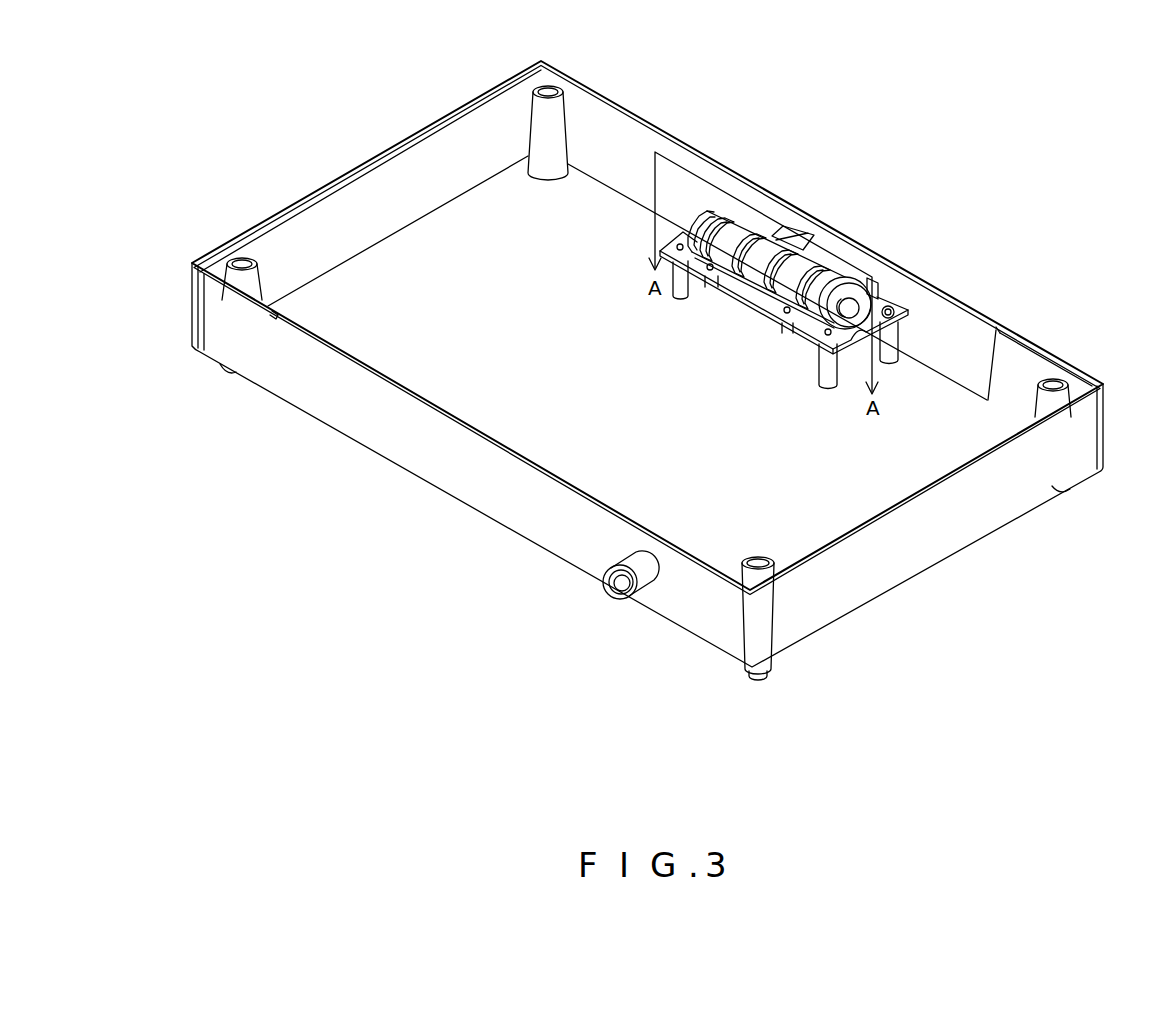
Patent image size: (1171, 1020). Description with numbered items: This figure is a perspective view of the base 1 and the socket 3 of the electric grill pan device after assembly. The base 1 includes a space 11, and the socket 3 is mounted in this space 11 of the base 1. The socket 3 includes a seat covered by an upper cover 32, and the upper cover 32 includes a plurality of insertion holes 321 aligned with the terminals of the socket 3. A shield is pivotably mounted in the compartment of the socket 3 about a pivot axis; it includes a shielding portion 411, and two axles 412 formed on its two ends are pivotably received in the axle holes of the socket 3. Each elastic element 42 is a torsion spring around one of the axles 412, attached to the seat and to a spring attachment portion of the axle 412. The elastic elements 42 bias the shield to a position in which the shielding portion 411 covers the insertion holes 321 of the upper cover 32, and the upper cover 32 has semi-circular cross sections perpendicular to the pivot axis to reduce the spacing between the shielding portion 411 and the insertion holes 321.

The base 1 is at (678, 370).
The space 11 is at (818, 518).
The socket 3 is at (842, 232).
The upper cover 32 is at (840, 277).
The insertion holes 321 is at (798, 238).
The shielding portion 411 is at (790, 235).
The axles 412 is at (891, 310).
The elastic element 42 is at (868, 302).